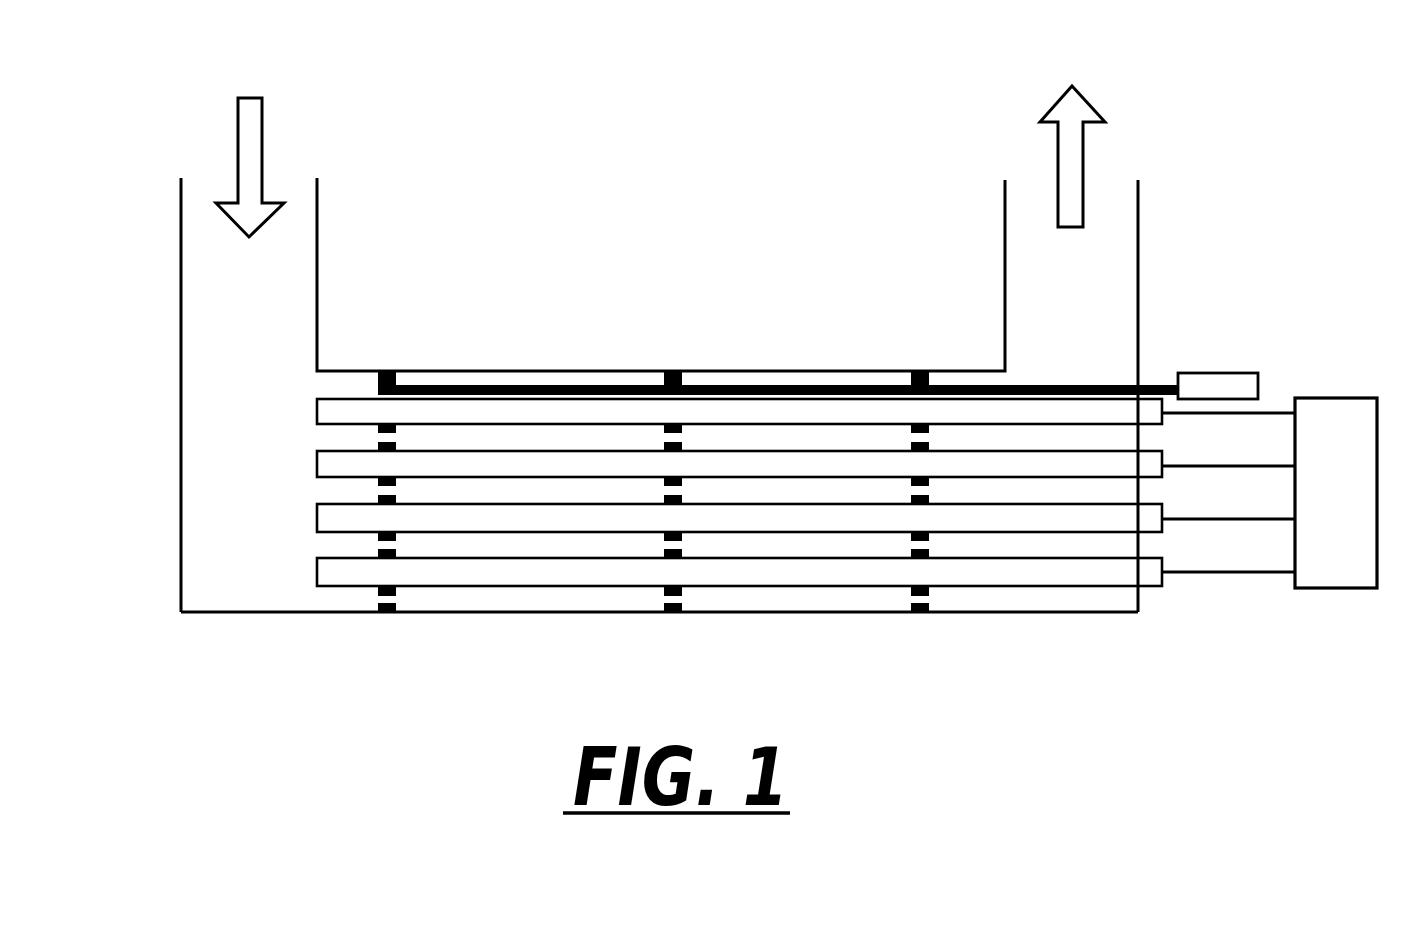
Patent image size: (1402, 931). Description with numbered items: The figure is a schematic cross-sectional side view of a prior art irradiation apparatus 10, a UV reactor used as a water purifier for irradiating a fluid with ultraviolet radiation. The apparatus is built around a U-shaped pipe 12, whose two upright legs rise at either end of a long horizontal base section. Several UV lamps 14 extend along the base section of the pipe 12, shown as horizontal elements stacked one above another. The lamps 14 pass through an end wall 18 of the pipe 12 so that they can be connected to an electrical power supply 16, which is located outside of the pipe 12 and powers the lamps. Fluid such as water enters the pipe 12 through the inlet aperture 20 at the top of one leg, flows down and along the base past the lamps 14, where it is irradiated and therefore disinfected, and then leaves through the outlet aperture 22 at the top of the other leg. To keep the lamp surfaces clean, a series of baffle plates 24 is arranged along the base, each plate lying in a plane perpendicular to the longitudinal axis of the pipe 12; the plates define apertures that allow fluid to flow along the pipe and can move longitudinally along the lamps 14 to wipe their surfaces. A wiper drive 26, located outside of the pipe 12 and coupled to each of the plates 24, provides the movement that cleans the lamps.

The irradiation apparatus 10 is at (200, 672).
The U-shaped pipe 12 is at (180, 560).
The UV lamps 14 is at (633, 413).
The electrical power supply 16 is at (1336, 493).
The end wall 18 is at (1140, 598).
The inlet aperture 20 is at (200, 192).
The outlet aperture 22 is at (1117, 193).
The baffle plates 24 is at (388, 368).
The wiper drive 26 is at (1212, 385).